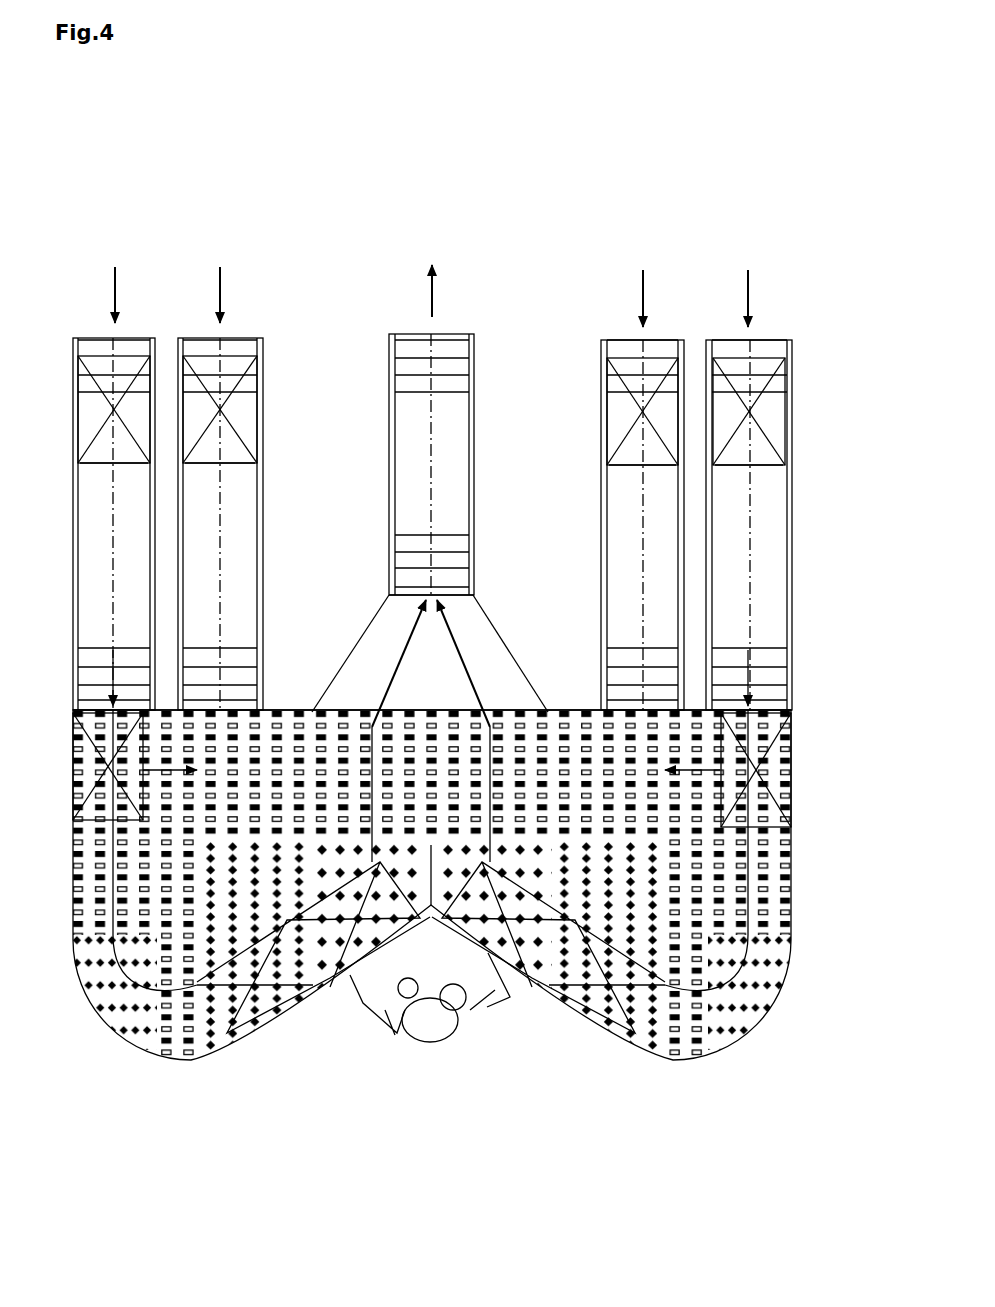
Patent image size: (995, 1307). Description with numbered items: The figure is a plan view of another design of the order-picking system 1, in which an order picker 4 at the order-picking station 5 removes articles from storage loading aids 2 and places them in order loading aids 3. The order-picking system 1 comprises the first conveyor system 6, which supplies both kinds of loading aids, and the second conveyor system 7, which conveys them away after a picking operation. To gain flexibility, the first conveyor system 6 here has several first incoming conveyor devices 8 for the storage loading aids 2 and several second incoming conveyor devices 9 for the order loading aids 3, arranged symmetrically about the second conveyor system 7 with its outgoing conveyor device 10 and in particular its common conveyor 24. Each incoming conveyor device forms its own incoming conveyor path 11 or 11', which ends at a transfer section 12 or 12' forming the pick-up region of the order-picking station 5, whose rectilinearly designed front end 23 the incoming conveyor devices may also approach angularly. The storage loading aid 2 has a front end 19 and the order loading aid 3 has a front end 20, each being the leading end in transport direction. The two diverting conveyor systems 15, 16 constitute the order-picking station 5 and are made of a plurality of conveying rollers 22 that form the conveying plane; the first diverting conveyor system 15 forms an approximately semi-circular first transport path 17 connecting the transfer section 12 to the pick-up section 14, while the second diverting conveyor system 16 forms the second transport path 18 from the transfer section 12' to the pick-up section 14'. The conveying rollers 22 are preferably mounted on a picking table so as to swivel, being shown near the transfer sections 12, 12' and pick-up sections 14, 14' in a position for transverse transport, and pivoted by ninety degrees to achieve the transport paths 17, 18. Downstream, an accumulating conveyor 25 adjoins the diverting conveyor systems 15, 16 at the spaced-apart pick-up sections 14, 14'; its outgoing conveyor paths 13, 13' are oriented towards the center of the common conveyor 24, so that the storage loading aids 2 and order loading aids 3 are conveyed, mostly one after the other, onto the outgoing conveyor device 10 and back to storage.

The order-picking system 1 is at (667, 138).
The storage loading aid 2 is at (207, 433).
The order loading aid 3 is at (753, 392).
The order picker 4 is at (455, 1040).
The order-picking station 5 is at (690, 1068).
The first conveyor system 6 is at (623, 258).
The second conveyor system 7 is at (410, 305).
The first incoming conveyor device 8 is at (207, 315).
The second incoming conveyor device 9 is at (667, 295).
The common outgoing conveyor device 10 is at (490, 347).
The incoming conveyor path 11 is at (75, 758).
The incoming conveyor path 11' is at (790, 773).
The transfer section 12 is at (190, 644).
The transfer section 12' is at (720, 634).
The outgoing conveyor path 13 is at (372, 613).
The outgoing conveyor path 13' is at (502, 636).
The pick-up section 14 is at (332, 653).
The pick-up section 14' is at (529, 653).
The first diverting conveyor system 15 is at (113, 1062).
The second diverting conveyor system 16 is at (765, 1045).
The first transport path 17 is at (110, 1020).
The second transport path 18 is at (737, 980).
The front end 19 is at (207, 467).
The front end 20 is at (718, 470).
The conveying roller 22 is at (650, 1040).
The front end 23 is at (563, 708).
The common conveyor 24 is at (448, 460).
The accumulating conveyor 25 is at (505, 570).